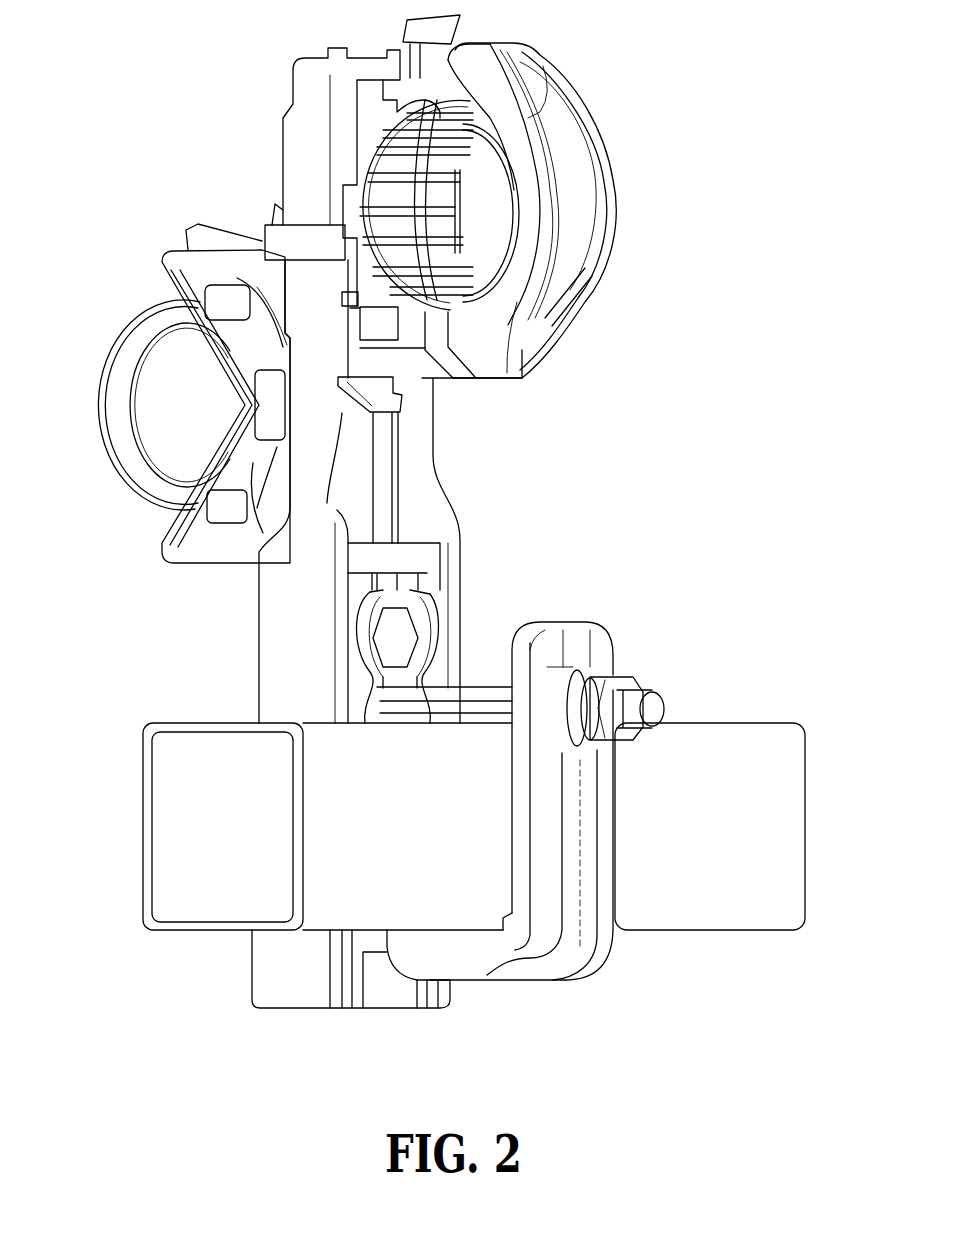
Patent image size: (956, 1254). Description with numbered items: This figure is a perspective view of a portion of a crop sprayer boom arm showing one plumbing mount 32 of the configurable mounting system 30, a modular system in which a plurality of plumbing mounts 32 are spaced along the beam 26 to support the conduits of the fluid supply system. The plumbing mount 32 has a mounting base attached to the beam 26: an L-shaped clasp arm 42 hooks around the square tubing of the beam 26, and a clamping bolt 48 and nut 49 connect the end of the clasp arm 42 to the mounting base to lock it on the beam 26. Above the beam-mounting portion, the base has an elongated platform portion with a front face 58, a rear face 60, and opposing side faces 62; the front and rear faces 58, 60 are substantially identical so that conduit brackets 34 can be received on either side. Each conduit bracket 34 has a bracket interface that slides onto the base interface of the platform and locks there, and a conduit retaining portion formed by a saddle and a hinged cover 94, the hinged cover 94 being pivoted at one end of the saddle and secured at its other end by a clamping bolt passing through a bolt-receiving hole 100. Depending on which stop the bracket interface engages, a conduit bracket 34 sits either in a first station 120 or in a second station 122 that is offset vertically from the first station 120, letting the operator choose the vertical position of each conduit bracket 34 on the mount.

The beam 26 is at (710, 938).
The configurable mounting system 30 is at (748, 315).
The plumbing mount 32 is at (293, 80).
The conduit bracket 34 is at (563, 78).
The clasp arm 42 is at (257, 640).
The clamping bolt 48 is at (470, 692).
The nut 49 is at (620, 673).
The front face 58 is at (408, 470).
The rear face 60 is at (283, 160).
The side face 62 is at (458, 406).
The hinged cover 94 is at (618, 203).
The bolt-receiving hole 100 is at (520, 360).
The first station 120 is at (85, 422).
The second station 122 is at (650, 145).